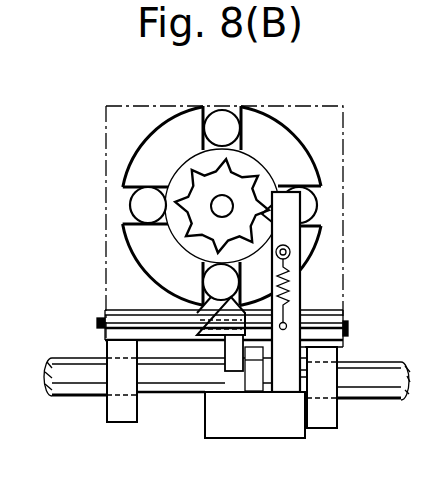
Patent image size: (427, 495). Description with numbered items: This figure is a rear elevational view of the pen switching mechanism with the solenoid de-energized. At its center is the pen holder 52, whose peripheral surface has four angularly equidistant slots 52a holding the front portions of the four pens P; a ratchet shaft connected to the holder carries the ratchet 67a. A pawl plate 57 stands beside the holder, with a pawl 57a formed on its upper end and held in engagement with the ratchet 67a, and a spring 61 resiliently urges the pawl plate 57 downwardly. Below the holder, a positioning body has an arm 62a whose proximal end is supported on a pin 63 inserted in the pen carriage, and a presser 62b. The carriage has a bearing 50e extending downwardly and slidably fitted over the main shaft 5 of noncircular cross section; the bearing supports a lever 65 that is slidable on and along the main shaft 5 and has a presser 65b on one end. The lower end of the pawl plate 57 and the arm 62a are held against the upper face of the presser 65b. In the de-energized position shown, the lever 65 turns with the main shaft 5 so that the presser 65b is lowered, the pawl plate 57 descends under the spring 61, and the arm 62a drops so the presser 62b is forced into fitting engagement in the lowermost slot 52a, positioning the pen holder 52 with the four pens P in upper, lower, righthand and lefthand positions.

The main shaft 5 is at (50, 380).
The bearing 50e is at (103, 407).
The pen holder 52 is at (307, 112).
The slots 52a is at (239, 108).
The pawl plate 57 is at (301, 288).
The pawl 57a is at (318, 229).
The spring 61 is at (344, 316).
The arm 62a is at (232, 356).
The presser 62b is at (300, 268).
The pin 63 is at (97, 323).
The lever 65 is at (300, 376).
The presser 65b is at (272, 420).
The ratchet 67a is at (284, 158).
The pens P is at (216, 106).